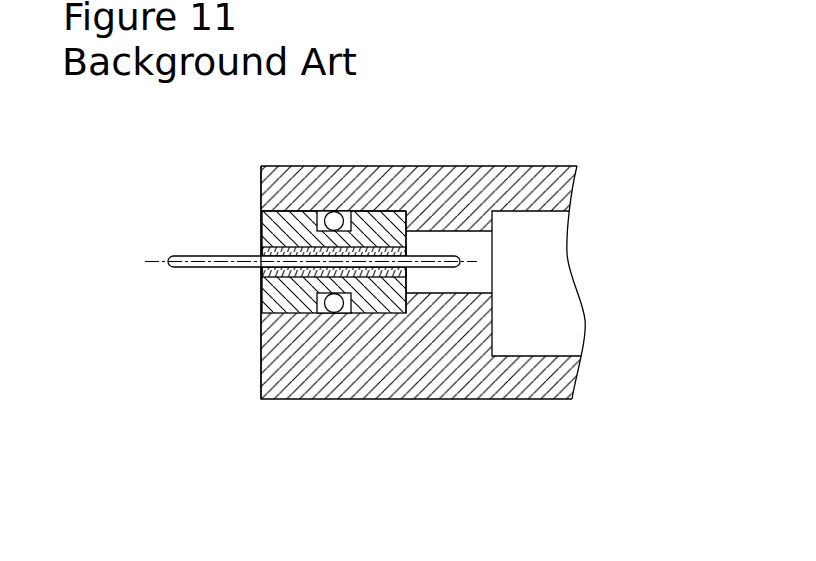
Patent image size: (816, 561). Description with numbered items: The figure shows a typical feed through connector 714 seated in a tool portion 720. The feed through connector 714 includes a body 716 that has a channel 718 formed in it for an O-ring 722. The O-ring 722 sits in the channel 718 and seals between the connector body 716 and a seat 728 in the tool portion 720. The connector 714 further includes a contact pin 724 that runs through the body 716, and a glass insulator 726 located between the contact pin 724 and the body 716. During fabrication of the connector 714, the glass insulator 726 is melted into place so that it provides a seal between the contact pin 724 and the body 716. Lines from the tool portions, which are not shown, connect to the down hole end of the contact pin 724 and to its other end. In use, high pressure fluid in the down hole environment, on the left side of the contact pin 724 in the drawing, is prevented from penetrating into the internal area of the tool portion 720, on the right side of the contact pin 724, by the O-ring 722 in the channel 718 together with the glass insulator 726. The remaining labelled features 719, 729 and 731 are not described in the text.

The feed through connector 714 is at (243, 215).
The body 716 is at (368, 222).
The channel 718 is at (337, 310).
The cavity 719 is at (480, 250).
The tool portion 720 is at (512, 381).
The O-ring 722 is at (327, 306).
The contact pin 724 is at (437, 256).
The glass insulator 726 is at (283, 280).
The seat 728 is at (290, 211).
The bushing top interface 729 is at (307, 213).
The bushing end face 731 is at (406, 303).